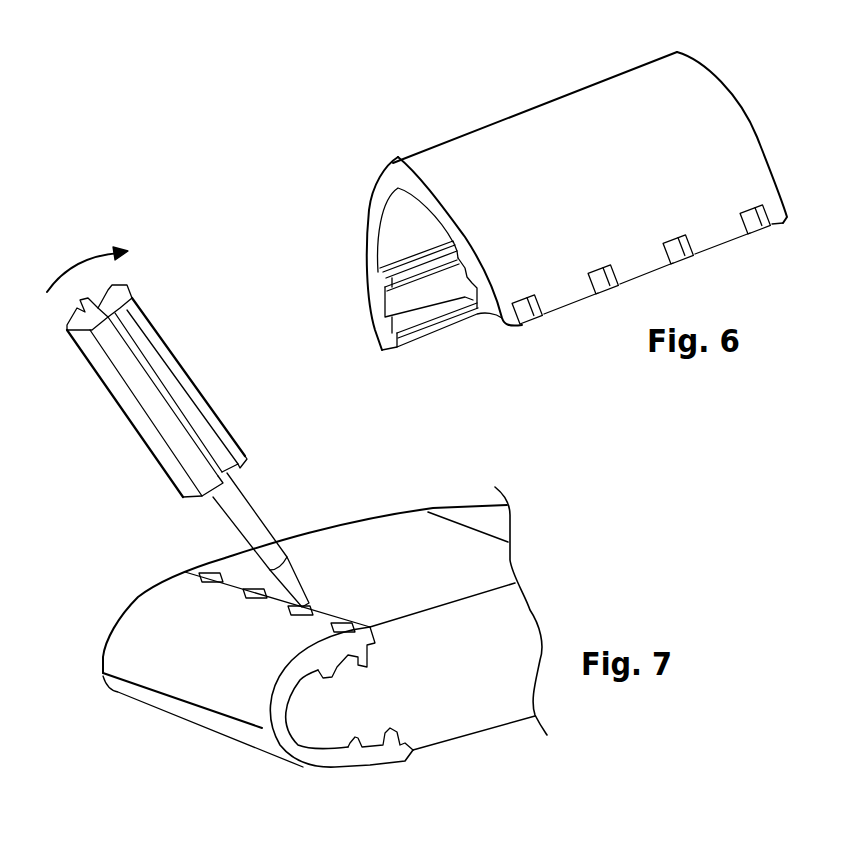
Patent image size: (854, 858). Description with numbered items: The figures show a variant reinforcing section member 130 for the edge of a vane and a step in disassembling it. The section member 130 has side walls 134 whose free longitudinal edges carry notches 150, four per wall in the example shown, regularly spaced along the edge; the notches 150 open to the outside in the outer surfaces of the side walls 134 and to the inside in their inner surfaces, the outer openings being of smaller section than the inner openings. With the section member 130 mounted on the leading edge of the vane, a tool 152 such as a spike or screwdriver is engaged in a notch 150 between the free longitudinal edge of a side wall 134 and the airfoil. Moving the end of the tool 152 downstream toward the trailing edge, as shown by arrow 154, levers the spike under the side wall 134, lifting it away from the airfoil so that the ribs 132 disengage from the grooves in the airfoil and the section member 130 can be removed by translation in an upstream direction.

In FIG. 6, the section member 130 is at (435, 352).
In FIG. 7, the section member 130 is at (183, 691).
In FIG. 7, the ribs 132 is at (363, 748).
In FIG. 6, the side walls 134 is at (372, 260).
In FIG. 7, the side walls 134 is at (173, 623).
In FIG. 6, the notches 150 is at (607, 300).
In FIG. 7, the tool 152 is at (138, 417).
In FIG. 7, the arrow 154 is at (68, 263).